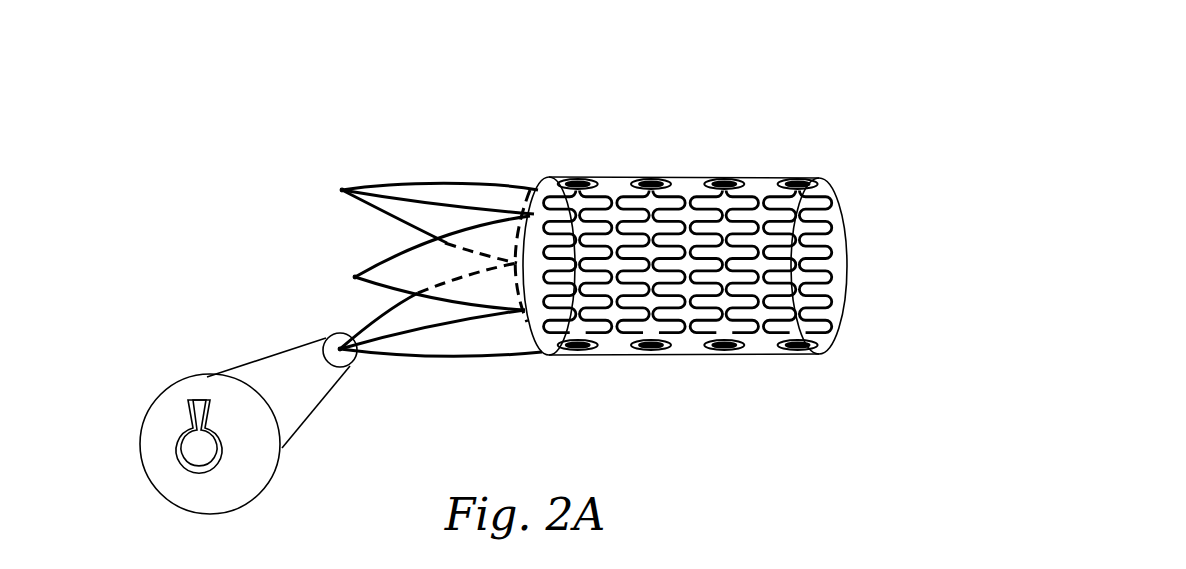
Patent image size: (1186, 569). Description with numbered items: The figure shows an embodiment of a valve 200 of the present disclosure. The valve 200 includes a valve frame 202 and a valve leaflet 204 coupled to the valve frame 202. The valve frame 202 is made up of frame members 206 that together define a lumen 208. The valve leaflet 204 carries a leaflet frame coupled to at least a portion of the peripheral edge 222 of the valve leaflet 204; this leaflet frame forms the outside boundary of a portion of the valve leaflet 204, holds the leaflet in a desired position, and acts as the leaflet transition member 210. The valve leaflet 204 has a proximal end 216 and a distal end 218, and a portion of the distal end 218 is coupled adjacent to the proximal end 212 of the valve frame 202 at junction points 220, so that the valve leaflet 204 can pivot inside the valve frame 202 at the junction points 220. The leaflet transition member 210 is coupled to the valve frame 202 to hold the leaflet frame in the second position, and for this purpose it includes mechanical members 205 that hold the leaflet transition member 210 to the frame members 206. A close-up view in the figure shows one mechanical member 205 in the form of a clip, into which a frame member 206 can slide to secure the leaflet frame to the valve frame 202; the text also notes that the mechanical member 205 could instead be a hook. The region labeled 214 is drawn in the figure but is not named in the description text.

The valve 200 is at (822, 80).
The valve frame 202 is at (833, 188).
The valve leaflet 204 is at (470, 186).
The mechanical member 205 is at (328, 186).
The frame members 206 is at (674, 198).
The lumen 208 is at (862, 266).
The leaflet transition member 210 is at (352, 188).
The proximal end of the valve frame 212 is at (500, 218).
The body portion 214 is at (811, 231).
The proximal end of the valve leaflet 216 is at (353, 363).
The distal end of the valve leaflet 218 is at (545, 304).
The junction points 220 is at (566, 181).
The peripheral edge 222 is at (422, 207).